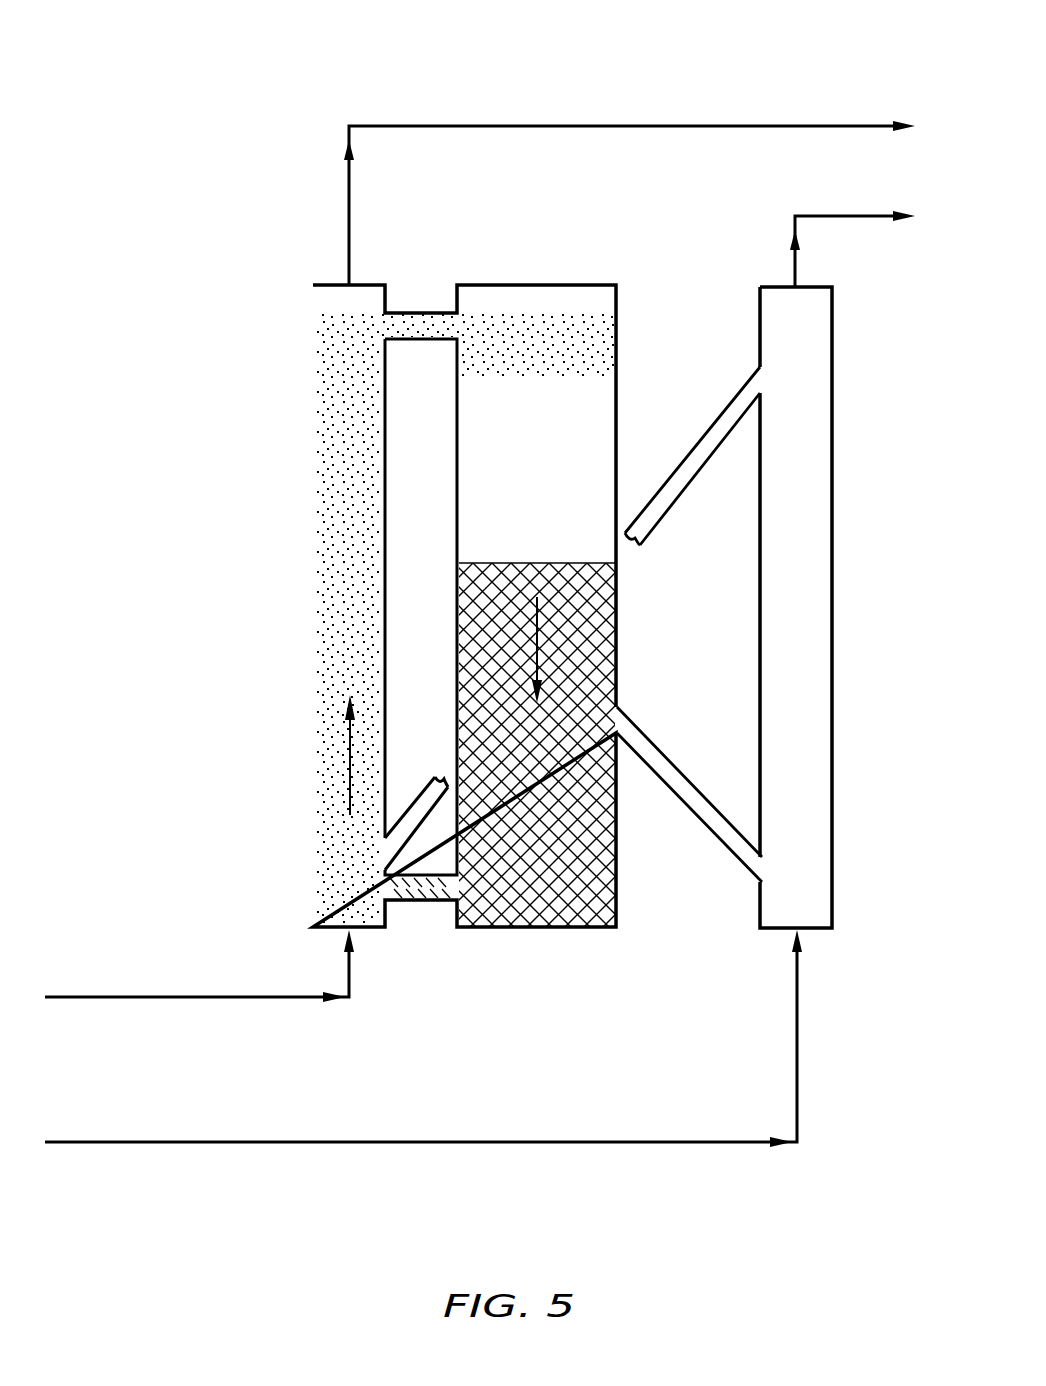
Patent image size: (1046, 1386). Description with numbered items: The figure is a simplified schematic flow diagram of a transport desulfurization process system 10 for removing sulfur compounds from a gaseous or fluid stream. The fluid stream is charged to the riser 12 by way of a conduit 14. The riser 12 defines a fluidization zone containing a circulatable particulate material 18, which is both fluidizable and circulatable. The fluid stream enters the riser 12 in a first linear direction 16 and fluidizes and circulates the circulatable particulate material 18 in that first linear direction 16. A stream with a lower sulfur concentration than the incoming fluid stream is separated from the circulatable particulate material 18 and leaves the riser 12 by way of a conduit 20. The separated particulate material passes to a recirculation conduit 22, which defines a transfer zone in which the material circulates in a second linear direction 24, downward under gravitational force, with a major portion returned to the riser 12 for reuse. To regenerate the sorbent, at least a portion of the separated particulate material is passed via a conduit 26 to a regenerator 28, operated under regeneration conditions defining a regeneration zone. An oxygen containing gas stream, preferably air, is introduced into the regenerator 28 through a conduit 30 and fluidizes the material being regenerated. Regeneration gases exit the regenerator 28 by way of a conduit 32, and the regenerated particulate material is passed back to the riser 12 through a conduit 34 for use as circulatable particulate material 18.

The transport desulfurization process system 10 is at (470, 50).
The riser 12 is at (313, 530).
The conduit 14 is at (277, 1000).
The first linear direction 16 is at (349, 765).
The circulatable particulate material 18 is at (368, 600).
The conduit 20 is at (610, 126).
The recirculation conduit 22 is at (617, 413).
The second linear direction 24 is at (537, 640).
The conduit 26 is at (685, 777).
The regenerator 28 is at (832, 510).
The conduit 30 is at (578, 1144).
The conduit 32 is at (830, 216).
The conduit 34 is at (686, 483).